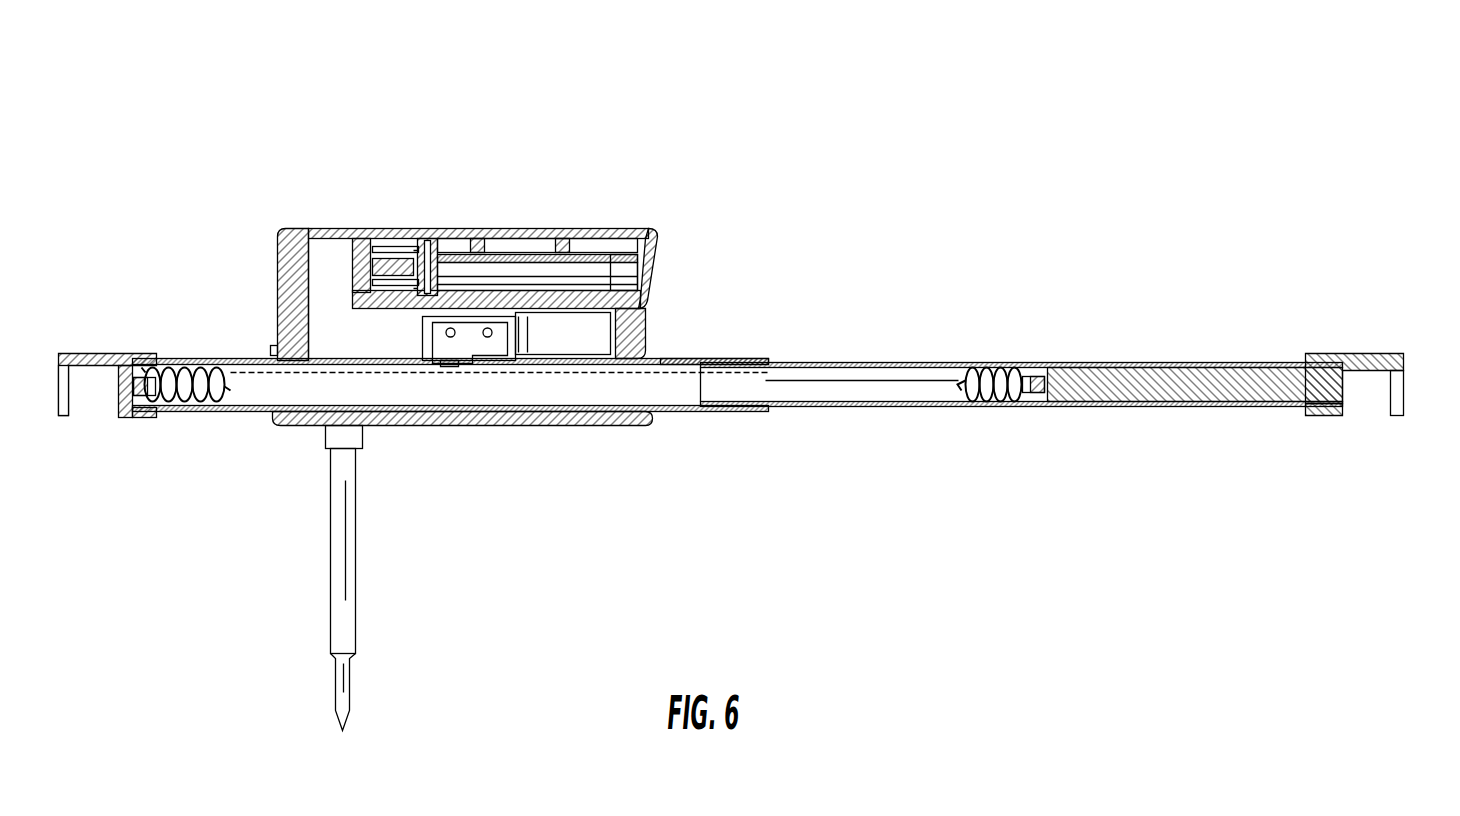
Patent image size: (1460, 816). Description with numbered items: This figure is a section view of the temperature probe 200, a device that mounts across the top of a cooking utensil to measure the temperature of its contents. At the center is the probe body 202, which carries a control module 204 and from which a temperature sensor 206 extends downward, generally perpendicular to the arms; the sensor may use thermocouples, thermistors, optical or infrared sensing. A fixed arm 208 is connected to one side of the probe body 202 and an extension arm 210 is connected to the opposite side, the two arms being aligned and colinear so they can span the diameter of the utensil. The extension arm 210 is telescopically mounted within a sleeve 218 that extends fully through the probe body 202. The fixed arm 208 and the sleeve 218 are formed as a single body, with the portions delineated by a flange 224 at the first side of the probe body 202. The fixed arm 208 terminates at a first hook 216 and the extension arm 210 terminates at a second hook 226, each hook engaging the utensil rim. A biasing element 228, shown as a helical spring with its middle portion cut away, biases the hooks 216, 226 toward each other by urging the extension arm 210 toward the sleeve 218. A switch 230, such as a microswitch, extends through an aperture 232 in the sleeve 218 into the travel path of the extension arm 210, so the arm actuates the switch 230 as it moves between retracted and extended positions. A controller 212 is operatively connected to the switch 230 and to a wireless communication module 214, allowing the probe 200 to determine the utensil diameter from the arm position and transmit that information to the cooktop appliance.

The temperature probe 200 is at (258, 103).
The probe body 202 is at (290, 273).
The control module 204 is at (641, 228).
The temperature sensor 206 is at (343, 641).
The fixed arm 208 is at (243, 411).
The extension arm 210 is at (868, 406).
The controller 212 is at (540, 272).
The wireless communication module 214 is at (400, 237).
The first hook 216 is at (92, 353).
The sleeve 218 is at (683, 358).
The flange 224 is at (270, 350).
The second hook 226 is at (1368, 353).
The biasing element 228 is at (178, 367).
The switch 230 is at (497, 337).
The aperture 232 is at (447, 369).